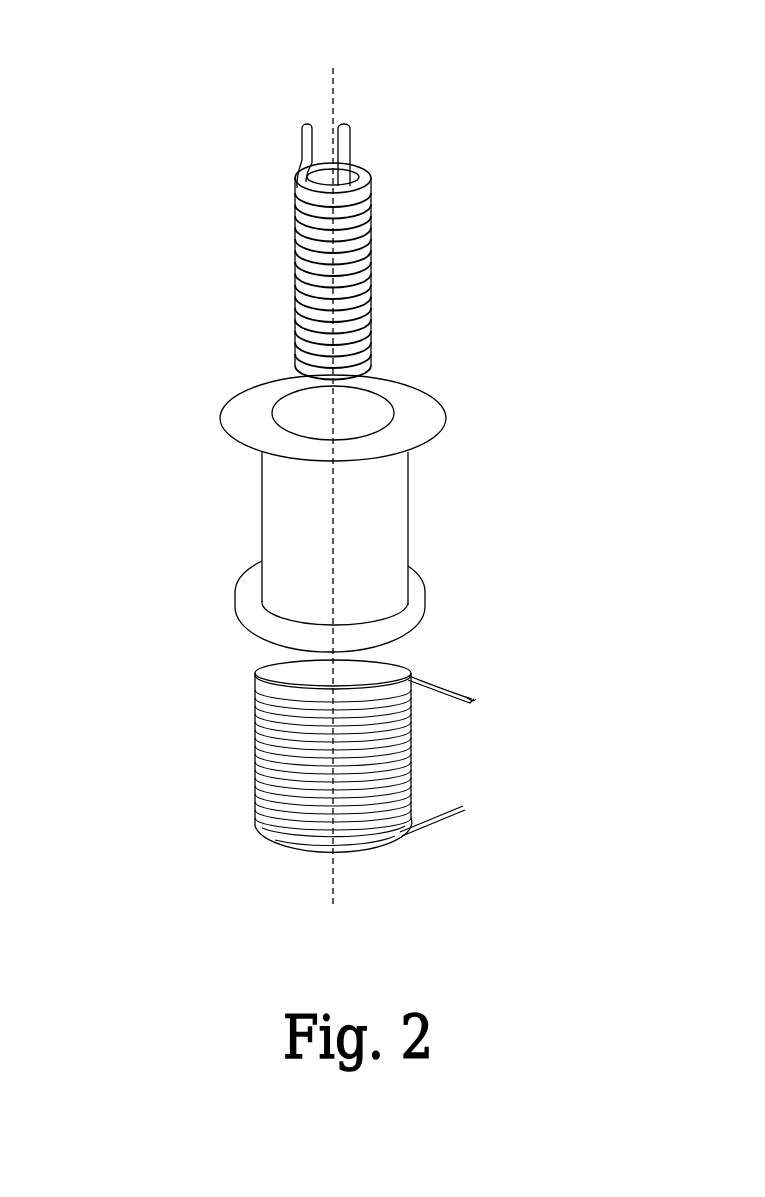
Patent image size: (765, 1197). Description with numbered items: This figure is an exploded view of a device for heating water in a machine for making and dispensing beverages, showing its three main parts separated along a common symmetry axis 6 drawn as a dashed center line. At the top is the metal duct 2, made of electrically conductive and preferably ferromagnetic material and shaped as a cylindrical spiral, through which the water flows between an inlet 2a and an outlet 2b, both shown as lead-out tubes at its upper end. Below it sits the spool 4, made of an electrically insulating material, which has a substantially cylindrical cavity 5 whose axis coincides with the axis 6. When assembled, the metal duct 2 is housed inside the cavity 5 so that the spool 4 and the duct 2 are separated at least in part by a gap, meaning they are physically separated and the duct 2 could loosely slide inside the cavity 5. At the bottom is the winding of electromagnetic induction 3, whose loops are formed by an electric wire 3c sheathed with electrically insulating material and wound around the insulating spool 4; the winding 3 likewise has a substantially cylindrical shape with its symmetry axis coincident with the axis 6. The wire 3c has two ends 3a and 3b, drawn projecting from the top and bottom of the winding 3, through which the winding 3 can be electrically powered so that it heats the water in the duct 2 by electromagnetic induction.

The metal duct 2 is at (292, 247).
The inlet 2a is at (344, 125).
The outlet 2b is at (307, 125).
The winding of electromagnetic induction 3 is at (252, 743).
The end 3a is at (462, 696).
The end 3b is at (463, 806).
The electric wire 3c is at (420, 674).
The spool 4 is at (393, 515).
The cavity 5 is at (364, 404).
The symmetry axis 6 is at (328, 885).